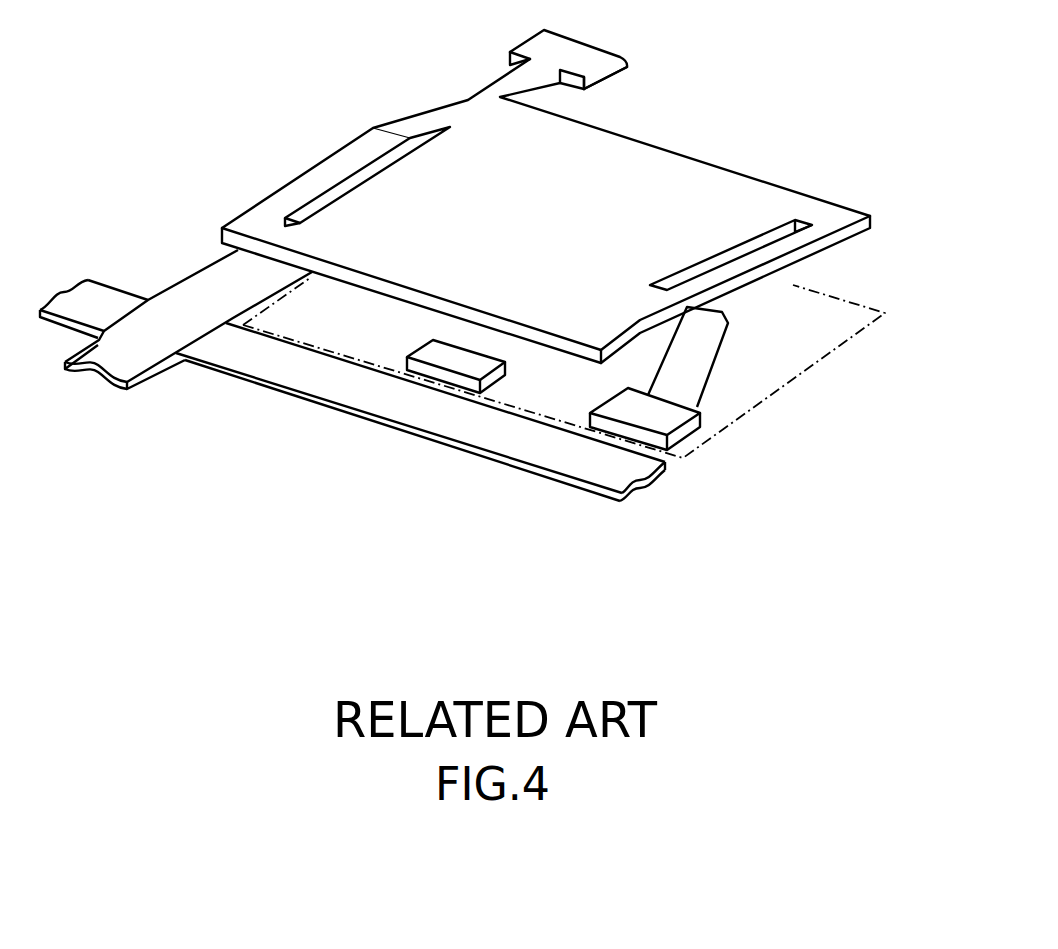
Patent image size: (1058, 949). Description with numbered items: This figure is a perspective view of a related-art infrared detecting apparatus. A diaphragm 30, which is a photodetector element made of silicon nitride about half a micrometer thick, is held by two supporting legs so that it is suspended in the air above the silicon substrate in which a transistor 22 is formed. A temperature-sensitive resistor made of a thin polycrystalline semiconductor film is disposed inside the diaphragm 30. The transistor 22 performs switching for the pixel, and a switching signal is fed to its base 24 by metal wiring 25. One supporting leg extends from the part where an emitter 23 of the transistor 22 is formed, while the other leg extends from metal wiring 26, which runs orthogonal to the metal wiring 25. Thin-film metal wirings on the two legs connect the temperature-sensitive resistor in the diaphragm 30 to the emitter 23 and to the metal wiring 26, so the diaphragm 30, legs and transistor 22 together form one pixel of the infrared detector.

The transistor 22 is at (775, 363).
The emitter 23 is at (665, 423).
The base 24 is at (460, 372).
The metal wiring 25 is at (285, 367).
The metal wiring 26 is at (223, 273).
The diaphragm 30 is at (668, 163).